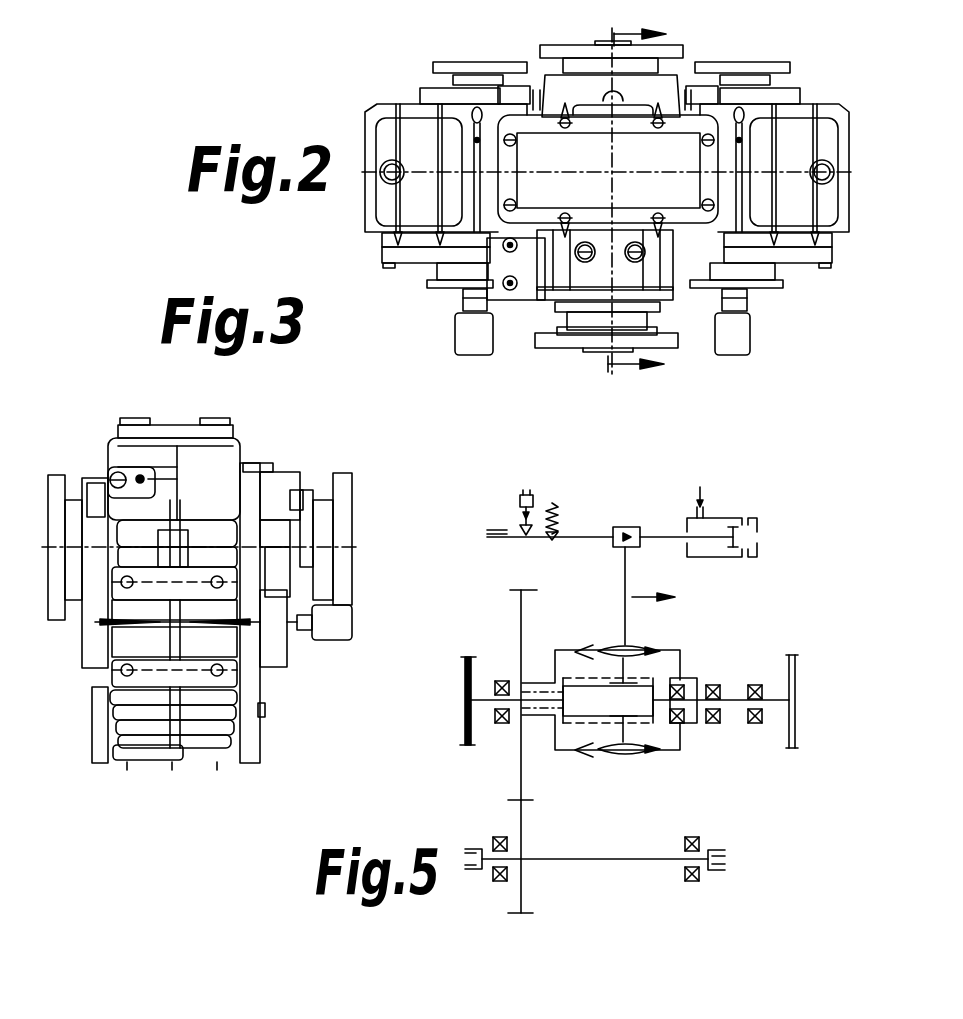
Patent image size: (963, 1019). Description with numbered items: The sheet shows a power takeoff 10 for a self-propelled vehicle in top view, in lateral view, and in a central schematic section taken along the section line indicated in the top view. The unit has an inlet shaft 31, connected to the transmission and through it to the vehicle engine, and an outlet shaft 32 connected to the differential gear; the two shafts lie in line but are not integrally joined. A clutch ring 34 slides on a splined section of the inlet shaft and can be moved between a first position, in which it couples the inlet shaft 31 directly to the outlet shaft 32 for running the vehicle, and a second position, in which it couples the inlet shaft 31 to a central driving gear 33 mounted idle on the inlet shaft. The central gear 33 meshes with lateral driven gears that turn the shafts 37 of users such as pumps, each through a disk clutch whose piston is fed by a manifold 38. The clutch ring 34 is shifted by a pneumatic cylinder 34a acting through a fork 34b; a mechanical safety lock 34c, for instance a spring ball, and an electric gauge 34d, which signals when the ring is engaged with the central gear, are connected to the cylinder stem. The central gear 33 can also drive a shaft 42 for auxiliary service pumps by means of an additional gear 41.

In FIG. 2, the drive unit 10 is at (352, 95).
In FIG. 2, the inlet shaft 31 is at (612, 42).
In FIG. 5, the inlet shaft 31 is at (467, 700).
In FIG. 2, the outlet shaft 32 is at (608, 341).
In FIG. 5, the outlet shaft 32 is at (796, 700).
In FIG. 5, the central driving gear 33 is at (520, 753).
In FIG. 5, the clutch ring 34 is at (633, 643).
In FIG. 5, the pneumatic cylinder 34a is at (713, 522).
In FIG. 5, the fork 34b is at (627, 563).
In FIG. 5, the mechanical safety lock 34c is at (570, 500).
In FIG. 5, the electric gauge 34d is at (518, 500).
In FIG. 2, the shaft of a user 37 is at (478, 60).
In FIG. 2, the manifold 38 is at (465, 335).
In FIG. 5, the additional gear 41 is at (523, 830).
In FIG. 5, the shaft for auxiliary service pumps 42 is at (567, 860).